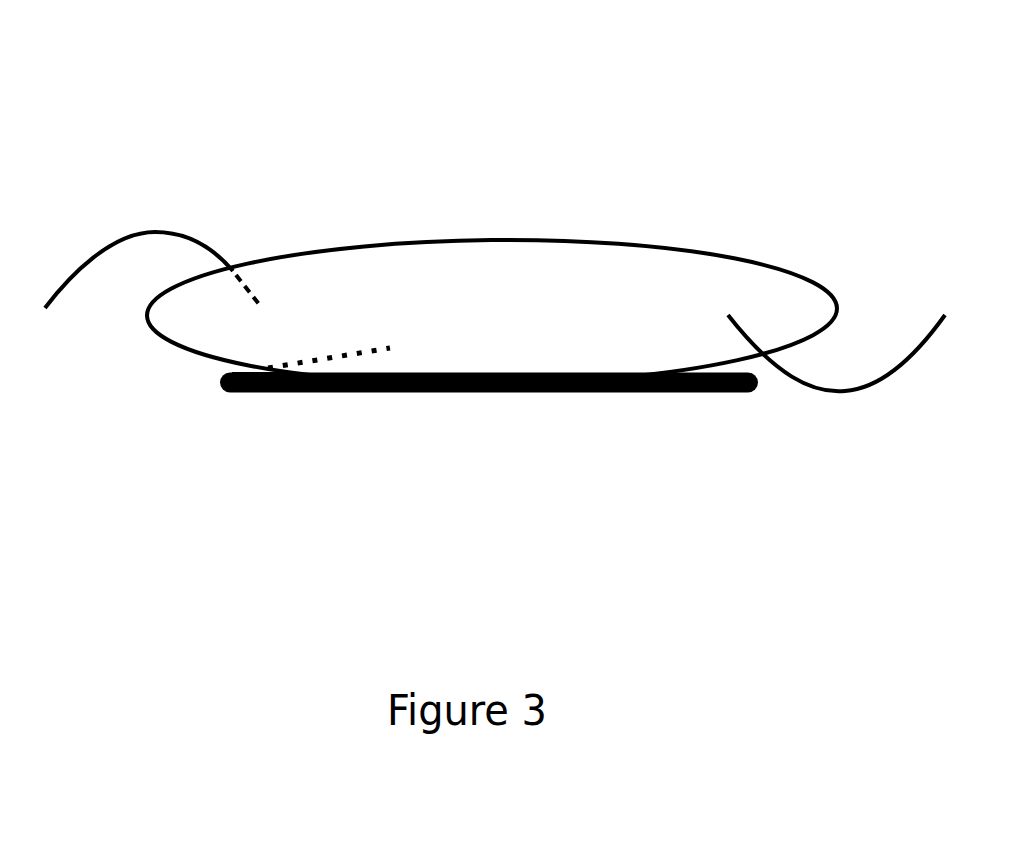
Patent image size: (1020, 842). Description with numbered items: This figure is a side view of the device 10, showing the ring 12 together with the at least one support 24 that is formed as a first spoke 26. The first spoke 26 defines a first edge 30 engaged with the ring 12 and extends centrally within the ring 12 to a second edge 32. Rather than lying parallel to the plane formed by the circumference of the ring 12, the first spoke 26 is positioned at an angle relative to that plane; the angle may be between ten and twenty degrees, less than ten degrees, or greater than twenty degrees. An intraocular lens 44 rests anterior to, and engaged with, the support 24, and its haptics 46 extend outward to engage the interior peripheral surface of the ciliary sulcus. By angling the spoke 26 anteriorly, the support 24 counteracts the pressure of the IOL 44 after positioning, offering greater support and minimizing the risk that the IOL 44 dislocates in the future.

The device 10 is at (393, 48).
The ring 12 is at (472, 393).
The support 24 is at (322, 392).
The first spoke 26 is at (489, 439).
The first edge 30 is at (227, 376).
The second edge 32 is at (388, 348).
The intraocular lens 44 is at (491, 311).
The haptics 46 is at (90, 257).